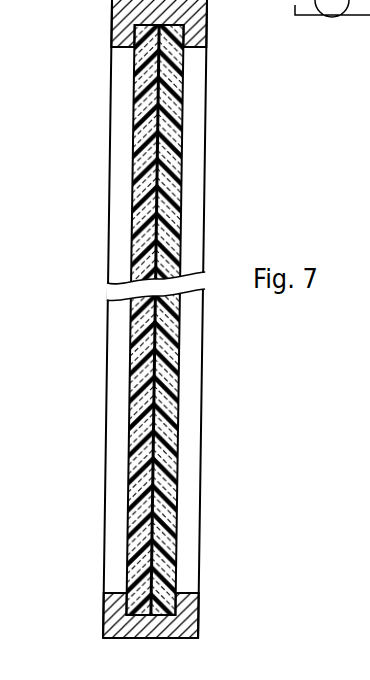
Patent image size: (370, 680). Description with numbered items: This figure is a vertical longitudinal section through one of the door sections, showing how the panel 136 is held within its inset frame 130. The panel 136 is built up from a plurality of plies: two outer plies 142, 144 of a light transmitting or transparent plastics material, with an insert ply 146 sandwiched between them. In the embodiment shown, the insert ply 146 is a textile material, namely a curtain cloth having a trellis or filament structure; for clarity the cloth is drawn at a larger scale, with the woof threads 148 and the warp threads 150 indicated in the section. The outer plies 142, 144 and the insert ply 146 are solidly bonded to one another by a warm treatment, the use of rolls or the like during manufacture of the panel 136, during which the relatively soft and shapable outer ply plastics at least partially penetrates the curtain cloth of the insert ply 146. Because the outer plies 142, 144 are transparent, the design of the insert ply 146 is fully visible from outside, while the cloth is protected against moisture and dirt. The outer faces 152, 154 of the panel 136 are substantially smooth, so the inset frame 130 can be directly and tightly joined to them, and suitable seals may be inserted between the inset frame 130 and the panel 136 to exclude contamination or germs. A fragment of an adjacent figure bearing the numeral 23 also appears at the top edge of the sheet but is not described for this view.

The adjacent figure element (fragment) 23 is at (295, 5).
The inset frame 130 is at (118, 25).
The panel 136 is at (118, 70).
The outer ply 142 is at (135, 115).
The outer ply 144 is at (185, 117).
The insert ply 146 is at (133, 234).
The woof threads 148 is at (142, 404).
The warp threads 150 is at (150, 457).
The outer face 152 is at (133, 325).
The outer face 154 is at (179, 345).